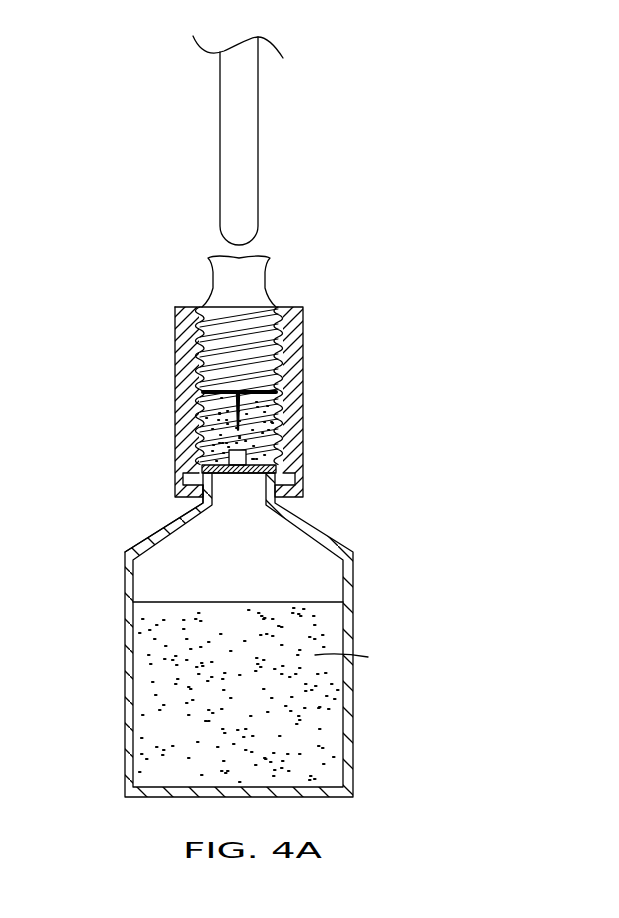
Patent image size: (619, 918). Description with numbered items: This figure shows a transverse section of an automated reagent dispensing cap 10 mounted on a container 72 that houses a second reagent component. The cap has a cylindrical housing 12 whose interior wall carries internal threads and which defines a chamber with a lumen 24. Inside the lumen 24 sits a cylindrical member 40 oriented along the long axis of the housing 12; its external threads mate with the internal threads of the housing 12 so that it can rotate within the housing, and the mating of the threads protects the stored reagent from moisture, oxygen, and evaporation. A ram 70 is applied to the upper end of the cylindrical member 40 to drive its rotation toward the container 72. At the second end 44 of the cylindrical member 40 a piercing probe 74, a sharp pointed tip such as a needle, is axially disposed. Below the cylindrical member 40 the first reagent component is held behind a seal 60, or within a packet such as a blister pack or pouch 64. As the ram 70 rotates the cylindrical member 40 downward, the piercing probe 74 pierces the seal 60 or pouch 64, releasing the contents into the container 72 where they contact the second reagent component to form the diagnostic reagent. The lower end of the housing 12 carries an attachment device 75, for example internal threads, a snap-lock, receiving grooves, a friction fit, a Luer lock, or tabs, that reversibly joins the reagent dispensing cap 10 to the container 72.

The ram 70 is at (250, 105).
The reagent dispensing cap 10 is at (326, 290).
The cylindrical housing 12 is at (298, 365).
The cylindrical member 40 is at (197, 351).
The second end of the cylindrical member 44 is at (203, 389).
The piercing probe 74 is at (234, 413).
The lumen 24 is at (230, 431).
The pouch 64 is at (228, 459).
The seal 60 is at (270, 470).
The attachment device 75 is at (186, 497).
The container 72 is at (127, 670).